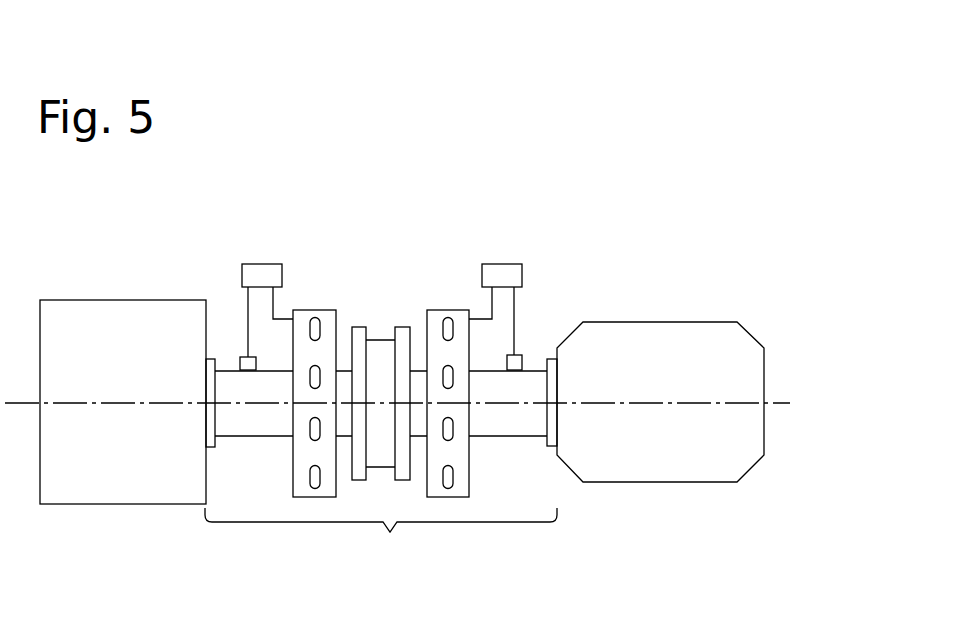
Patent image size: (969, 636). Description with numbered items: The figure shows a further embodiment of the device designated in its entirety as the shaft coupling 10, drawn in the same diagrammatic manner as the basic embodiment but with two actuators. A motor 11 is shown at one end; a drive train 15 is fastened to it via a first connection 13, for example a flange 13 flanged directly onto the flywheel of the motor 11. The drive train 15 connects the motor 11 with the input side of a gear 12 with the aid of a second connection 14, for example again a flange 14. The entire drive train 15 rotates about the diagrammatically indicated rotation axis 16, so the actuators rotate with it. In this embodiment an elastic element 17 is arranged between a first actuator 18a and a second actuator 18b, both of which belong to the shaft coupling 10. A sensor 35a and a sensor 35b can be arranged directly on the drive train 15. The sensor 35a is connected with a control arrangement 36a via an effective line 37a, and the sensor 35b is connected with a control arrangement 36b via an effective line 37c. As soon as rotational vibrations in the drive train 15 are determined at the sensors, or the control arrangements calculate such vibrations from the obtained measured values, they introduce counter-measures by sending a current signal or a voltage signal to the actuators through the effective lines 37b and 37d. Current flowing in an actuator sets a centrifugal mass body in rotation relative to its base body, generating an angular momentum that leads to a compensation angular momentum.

The shaft coupling 10 is at (553, 157).
The motor 11 is at (692, 345).
The gear 12 is at (142, 332).
The first connection 13 is at (552, 447).
The second connection 14 is at (212, 447).
The drive train 15 is at (390, 532).
The rotation axis 16 is at (630, 402).
The elastic element 17 is at (383, 335).
The first actuator 18a is at (455, 497).
The second actuator 18b is at (327, 308).
The sensor 35a is at (247, 362).
The sensor 35b is at (515, 363).
The control arrangement 36a is at (262, 273).
The control arrangement 36b is at (502, 273).
The effective line 37a is at (247, 308).
The effective line 37b is at (273, 303).
The effective line 37c is at (490, 303).
The effective line 37d is at (517, 307).